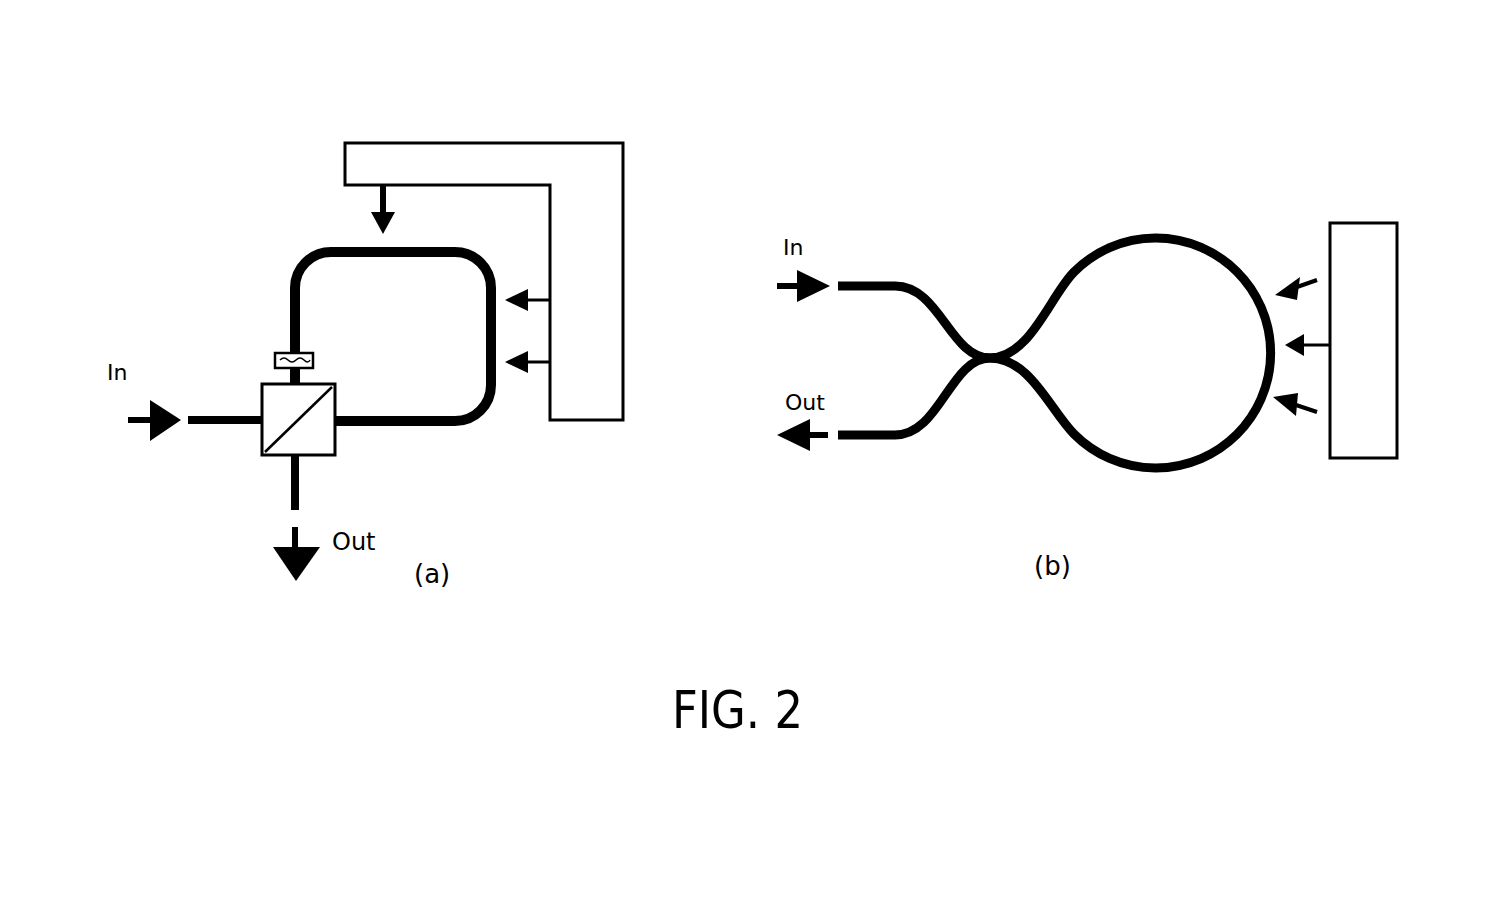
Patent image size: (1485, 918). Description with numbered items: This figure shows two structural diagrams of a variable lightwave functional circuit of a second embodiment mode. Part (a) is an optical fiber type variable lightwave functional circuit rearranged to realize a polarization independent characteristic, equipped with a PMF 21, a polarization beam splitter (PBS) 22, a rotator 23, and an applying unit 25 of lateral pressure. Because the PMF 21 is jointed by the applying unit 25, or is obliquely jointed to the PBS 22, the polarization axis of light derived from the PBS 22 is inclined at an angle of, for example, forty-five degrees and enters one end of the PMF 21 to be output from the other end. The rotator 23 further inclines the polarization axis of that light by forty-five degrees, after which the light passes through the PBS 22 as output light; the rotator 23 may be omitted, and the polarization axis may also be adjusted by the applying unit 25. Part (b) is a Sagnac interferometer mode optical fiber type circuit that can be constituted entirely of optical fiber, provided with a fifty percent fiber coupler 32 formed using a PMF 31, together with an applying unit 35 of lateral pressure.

The PMF 21 is at (300, 263).
The polarization beam splitter 22 is at (260, 437).
The rotator 23 is at (275, 353).
The applying unit of lateral pressure 25 is at (623, 217).
The PMF 31 is at (1197, 242).
The 50% fiber coupler 32 is at (978, 347).
The applying unit of lateral pressure 35 is at (1397, 241).